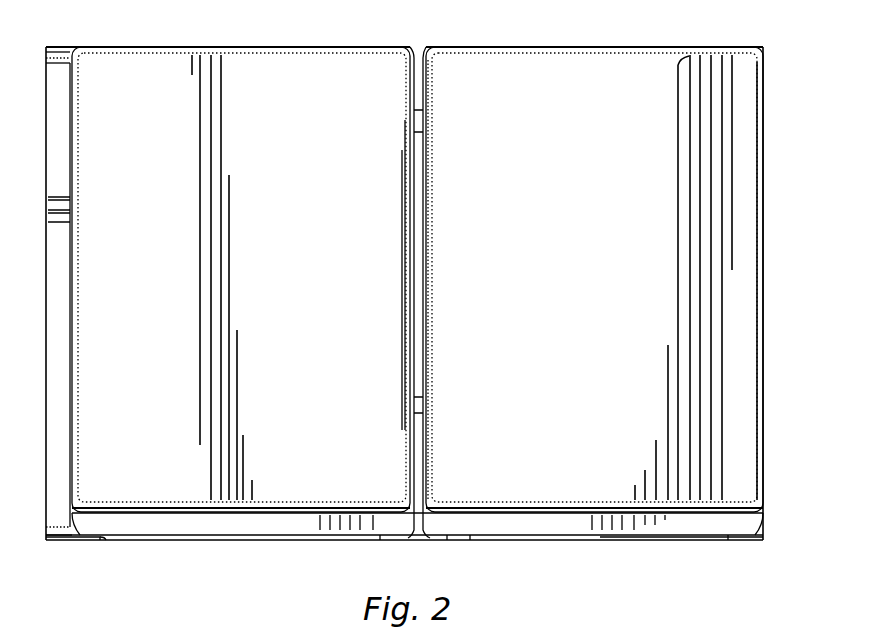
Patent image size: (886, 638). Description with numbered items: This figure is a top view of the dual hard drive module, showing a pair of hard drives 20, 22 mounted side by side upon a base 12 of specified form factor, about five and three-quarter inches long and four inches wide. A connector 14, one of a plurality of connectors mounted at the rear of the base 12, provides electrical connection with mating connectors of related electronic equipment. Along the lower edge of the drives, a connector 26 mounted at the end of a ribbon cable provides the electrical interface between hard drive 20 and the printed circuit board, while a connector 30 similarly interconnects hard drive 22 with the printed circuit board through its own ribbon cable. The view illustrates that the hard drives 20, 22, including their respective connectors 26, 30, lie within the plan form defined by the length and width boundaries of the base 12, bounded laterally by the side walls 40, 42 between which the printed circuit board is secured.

The base 12 is at (44, 453).
The connector 14 is at (57, 218).
The hard drive 20 is at (571, 67).
The hard drive 22 is at (301, 73).
The connector 26 is at (606, 542).
The connector 30 is at (305, 542).
The side wall 40 is at (105, 545).
The side wall 42 is at (62, 49).